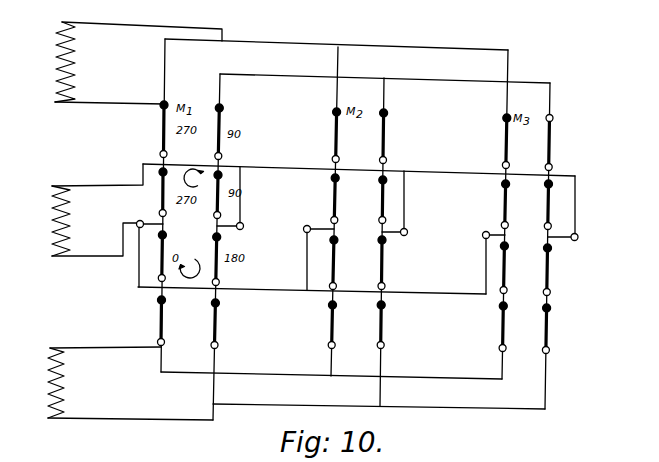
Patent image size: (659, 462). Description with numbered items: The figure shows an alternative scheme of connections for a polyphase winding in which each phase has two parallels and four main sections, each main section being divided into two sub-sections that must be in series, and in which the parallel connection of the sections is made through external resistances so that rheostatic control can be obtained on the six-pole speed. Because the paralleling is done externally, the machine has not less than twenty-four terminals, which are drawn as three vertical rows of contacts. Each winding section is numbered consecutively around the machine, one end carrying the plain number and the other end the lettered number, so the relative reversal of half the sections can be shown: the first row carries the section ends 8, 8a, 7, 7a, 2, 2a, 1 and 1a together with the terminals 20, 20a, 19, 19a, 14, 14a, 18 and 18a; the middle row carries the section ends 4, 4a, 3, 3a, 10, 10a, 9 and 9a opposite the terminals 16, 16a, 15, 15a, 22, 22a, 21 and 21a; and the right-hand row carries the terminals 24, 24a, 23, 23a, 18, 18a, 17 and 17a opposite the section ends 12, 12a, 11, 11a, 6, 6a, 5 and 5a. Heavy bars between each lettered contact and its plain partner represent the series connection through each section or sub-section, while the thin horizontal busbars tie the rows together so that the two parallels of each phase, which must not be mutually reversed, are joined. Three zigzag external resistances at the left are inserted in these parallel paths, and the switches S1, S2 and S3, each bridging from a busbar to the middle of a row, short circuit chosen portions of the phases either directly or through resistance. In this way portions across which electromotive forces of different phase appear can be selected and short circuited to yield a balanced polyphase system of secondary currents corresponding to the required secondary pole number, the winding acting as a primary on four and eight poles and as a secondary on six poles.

The section end 1 is at (158, 341).
The section end 1a is at (155, 318).
The section end 2 is at (158, 278).
The section end 2a is at (156, 254).
The section end 3 is at (329, 218).
The section end 3a is at (326, 196).
The section end 4 is at (330, 158).
The section end 4a is at (328, 132).
The section end 5 is at (551, 352).
The section end 5a is at (556, 326).
The section end 6 is at (553, 292).
The section end 6a is at (557, 267).
The section end 7 is at (159, 212).
The section end 7a is at (156, 189).
The section end 8 is at (159, 153).
The section end 8a is at (156, 123).
The section end 9 is at (326, 345).
The section end 9a is at (324, 322).
The section end 10 is at (324, 285).
The section end 10a is at (323, 260).
The section end 11 is at (557, 225).
The section end 11a is at (560, 202).
The section end 12 is at (557, 166).
The section end 12a is at (561, 139).
The terminal 14 is at (224, 282).
The terminal 14a is at (228, 256).
The terminal 15 is at (390, 219).
The terminal 15a is at (394, 197).
The terminal 16 is at (392, 159).
The terminal 16a is at (394, 133).
The terminal 17 is at (496, 348).
The terminal 17a is at (493, 324).
The terminal 18 is at (367, 318).
The terminal 18a is at (371, 293).
The terminal 19 is at (225, 214).
The terminal 19a is at (229, 192).
The terminal 20 is at (227, 156).
The terminal 20a is at (230, 129).
The terminal 21 is at (376, 346).
The terminal 21a is at (376, 306).
The terminal 22 is at (390, 286).
The terminal 22a is at (393, 260).
The terminal 23 is at (497, 225).
The terminal 23a is at (495, 202).
The terminal 24 is at (497, 165).
The terminal 24a is at (497, 138).
The switch S1 is at (140, 249).
The switch S2 is at (309, 253).
The switch S3 is at (484, 261).